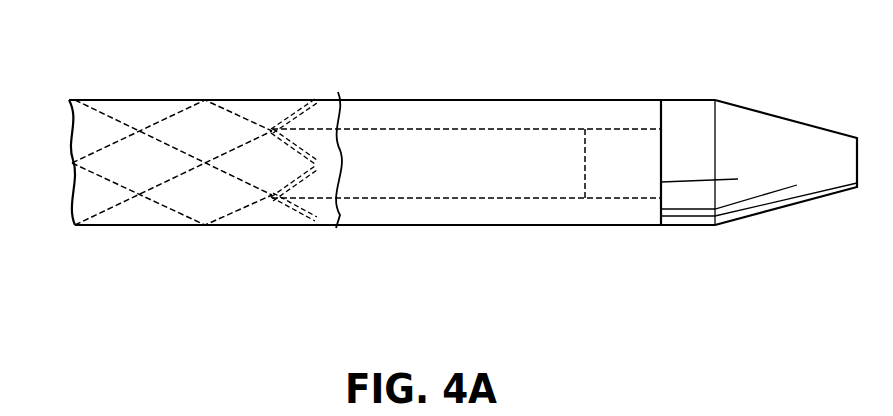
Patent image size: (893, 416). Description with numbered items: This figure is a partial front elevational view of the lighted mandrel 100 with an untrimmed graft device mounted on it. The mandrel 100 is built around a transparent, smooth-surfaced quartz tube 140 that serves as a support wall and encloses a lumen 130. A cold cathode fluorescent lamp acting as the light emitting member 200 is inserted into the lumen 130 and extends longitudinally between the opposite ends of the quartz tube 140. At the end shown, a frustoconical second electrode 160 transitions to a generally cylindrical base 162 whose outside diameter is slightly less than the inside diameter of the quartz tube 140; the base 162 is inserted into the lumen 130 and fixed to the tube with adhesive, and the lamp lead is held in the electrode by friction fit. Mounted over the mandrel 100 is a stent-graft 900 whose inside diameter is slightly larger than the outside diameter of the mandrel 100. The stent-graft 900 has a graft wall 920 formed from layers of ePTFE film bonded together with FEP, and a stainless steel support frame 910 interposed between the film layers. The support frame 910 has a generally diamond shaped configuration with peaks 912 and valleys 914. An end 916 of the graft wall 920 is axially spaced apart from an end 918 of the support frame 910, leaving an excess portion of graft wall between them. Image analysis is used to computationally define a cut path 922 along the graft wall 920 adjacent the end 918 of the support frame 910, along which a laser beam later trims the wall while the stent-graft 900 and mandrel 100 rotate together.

The lighted mandrel 100 is at (581, 252).
The lumen 130 is at (480, 162).
The quartz tube 140 is at (573, 99).
The second electrode 160 is at (780, 117).
The cylindrical base 162 is at (632, 127).
The light emitting member 200 is at (528, 127).
The stent-graft 900 is at (136, 75).
The support frame 910 is at (237, 117).
The peaks 912 is at (317, 101).
The valleys 914 is at (273, 133).
The end of the graft wall 916 is at (343, 118).
The end of the support frame 918 is at (313, 163).
The graft wall 920 is at (120, 168).
The cut path 922 is at (312, 215).